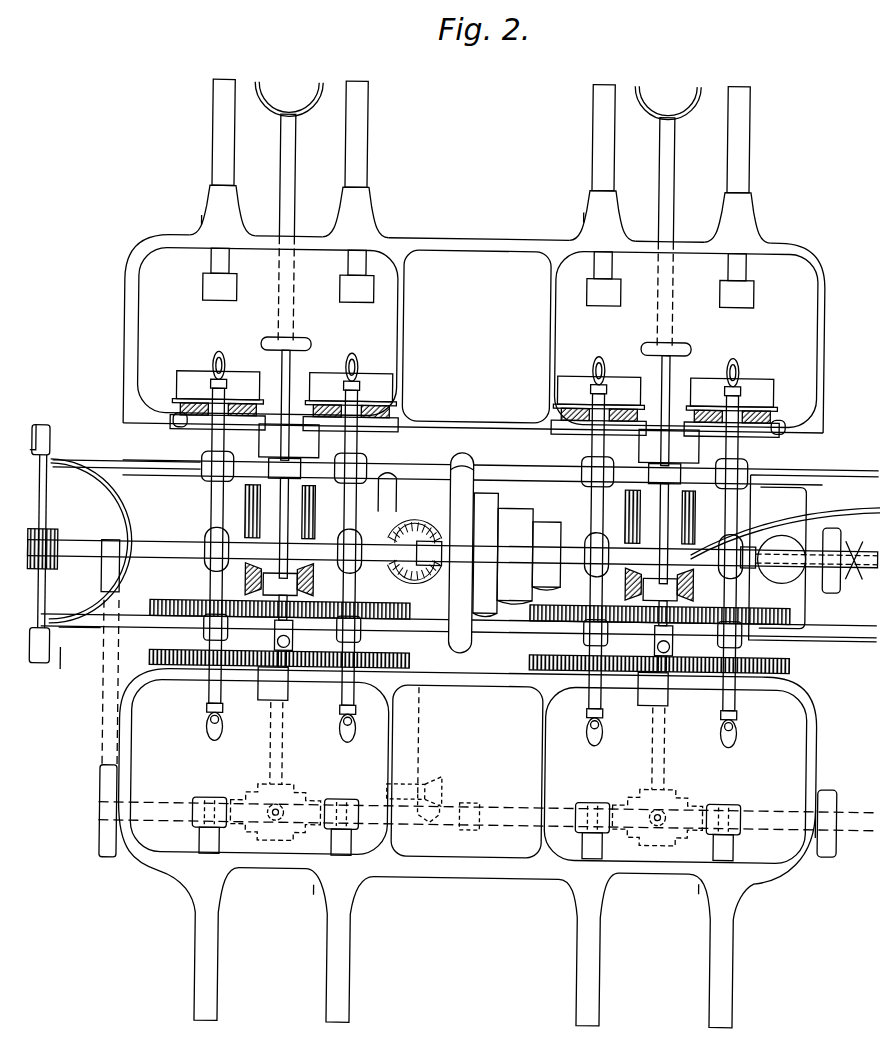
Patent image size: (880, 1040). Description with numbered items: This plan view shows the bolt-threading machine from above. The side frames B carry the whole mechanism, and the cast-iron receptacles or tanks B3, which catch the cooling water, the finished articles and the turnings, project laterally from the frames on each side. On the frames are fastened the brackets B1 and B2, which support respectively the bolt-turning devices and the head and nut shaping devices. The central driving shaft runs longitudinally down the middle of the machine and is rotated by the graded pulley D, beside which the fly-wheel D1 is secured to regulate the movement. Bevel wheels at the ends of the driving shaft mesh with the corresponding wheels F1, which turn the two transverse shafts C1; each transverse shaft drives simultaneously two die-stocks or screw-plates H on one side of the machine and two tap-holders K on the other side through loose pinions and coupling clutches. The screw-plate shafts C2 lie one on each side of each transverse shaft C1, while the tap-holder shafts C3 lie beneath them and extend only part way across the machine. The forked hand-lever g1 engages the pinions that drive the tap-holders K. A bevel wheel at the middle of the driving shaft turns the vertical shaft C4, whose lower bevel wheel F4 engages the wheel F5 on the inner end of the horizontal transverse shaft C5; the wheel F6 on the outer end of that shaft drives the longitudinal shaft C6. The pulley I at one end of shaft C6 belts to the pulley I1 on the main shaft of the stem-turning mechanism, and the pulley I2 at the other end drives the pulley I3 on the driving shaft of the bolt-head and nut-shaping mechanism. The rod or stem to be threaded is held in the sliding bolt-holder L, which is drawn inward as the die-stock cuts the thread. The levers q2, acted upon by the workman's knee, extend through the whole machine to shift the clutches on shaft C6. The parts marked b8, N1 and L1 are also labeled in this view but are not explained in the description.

The sliding bolt-holder L is at (480, 161).
The frame bosses b8 is at (464, 549).
The levers q2 is at (476, 213).
The receptacles B3 is at (475, 534).
The die-stocks or screw-plates H is at (197, 376).
The tap-holder shafts C3 is at (212, 684).
The tap-holders K is at (224, 698).
The transverse shafts C1 is at (292, 508).
The frames B is at (404, 473).
The main horizontal shaft N' N1 is at (452, 554).
The bevel-wheel F5 is at (404, 551).
The fly-wheel D1 is at (459, 553).
The graded pulley D is at (517, 555).
The bevel-wheel F4 is at (571, 526).
The bevel-wheels F1 is at (435, 548).
The bracket B2 is at (459, 616).
The bracket B1 is at (508, 626).
The pulley I1 is at (836, 584).
The pulley I is at (826, 814).
The screw-plate shafts C2 is at (470, 600).
The vertical shaft C4 is at (469, 650).
The lower legs L' L1 is at (466, 914).
The horizontal transverse shaft C5 is at (428, 740).
The longitudinal shaft C6 is at (486, 829).
The forked hand-lever g1 is at (467, 774).
The wheel F6 is at (433, 805).
The pulley I3 is at (113, 548).
The pulley I2 is at (89, 728).